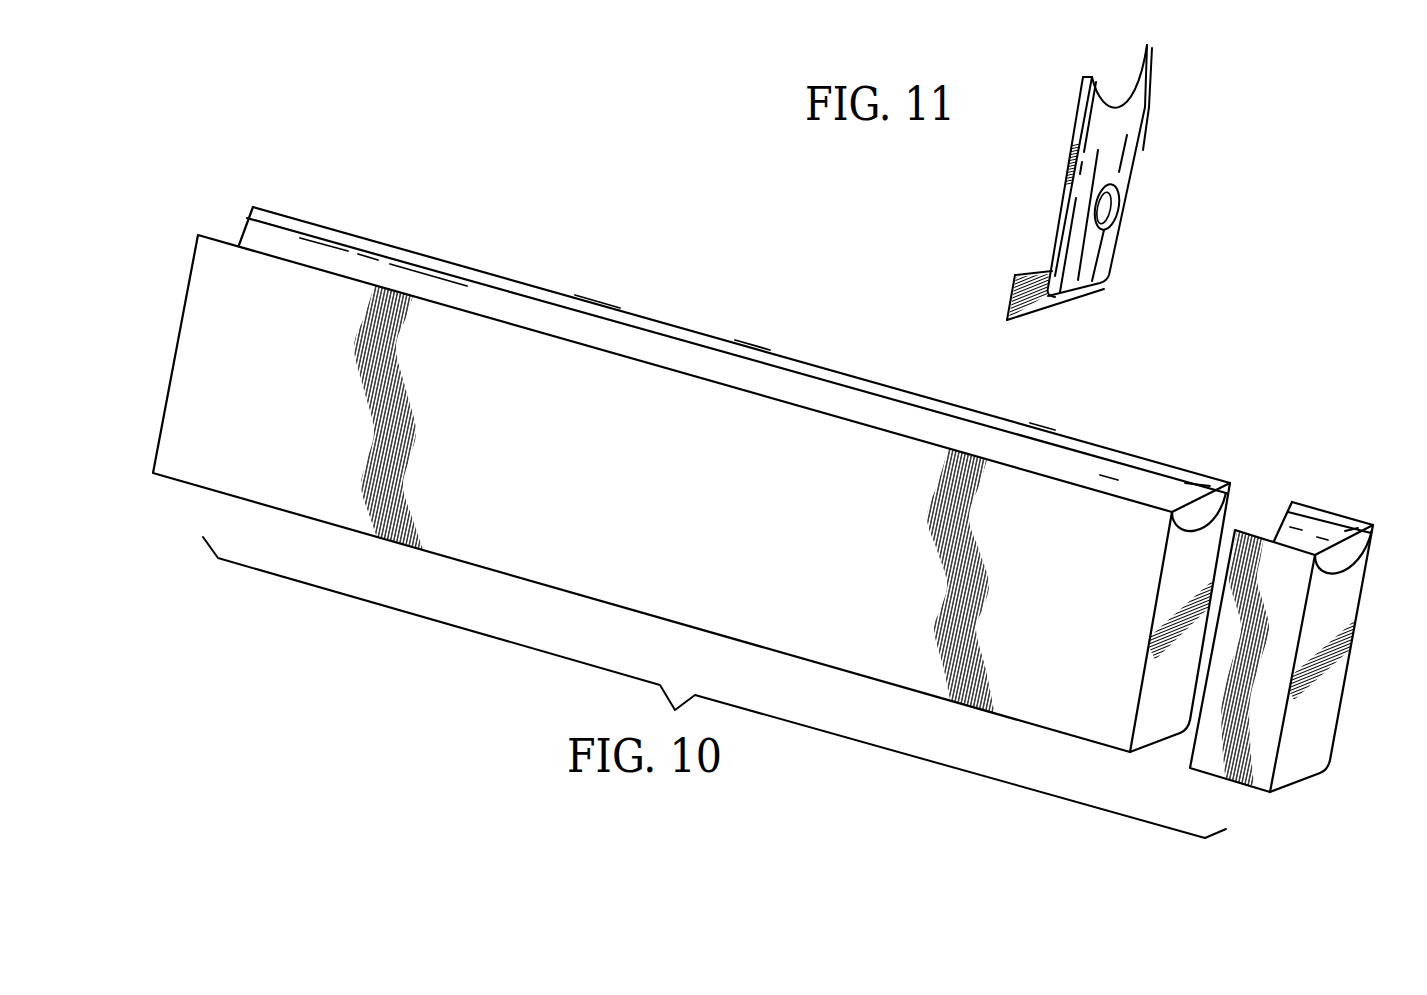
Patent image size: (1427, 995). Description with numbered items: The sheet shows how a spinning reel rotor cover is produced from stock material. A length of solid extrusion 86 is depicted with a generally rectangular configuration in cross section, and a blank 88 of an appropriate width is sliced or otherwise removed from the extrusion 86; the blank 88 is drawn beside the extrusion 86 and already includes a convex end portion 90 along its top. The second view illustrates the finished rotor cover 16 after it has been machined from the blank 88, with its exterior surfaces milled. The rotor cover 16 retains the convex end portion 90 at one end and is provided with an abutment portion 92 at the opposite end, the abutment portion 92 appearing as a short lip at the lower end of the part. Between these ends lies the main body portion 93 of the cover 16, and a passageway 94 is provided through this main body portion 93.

In FIG. 11, the rotor cover 16 is at (1100, 175).
In FIG. 10, the solid extrusion 86 is at (1116, 446).
In FIG. 10, the blank 88 is at (1308, 598).
In FIG. 10, the convex end portion 90 is at (1322, 530).
In FIG. 11, the convex end portion 90 is at (1142, 68).
In FIG. 11, the abutment portion 92 is at (1010, 293).
In FIG. 11, the main body portion 93 is at (1066, 184).
In FIG. 11, the passageway 94 is at (1124, 212).